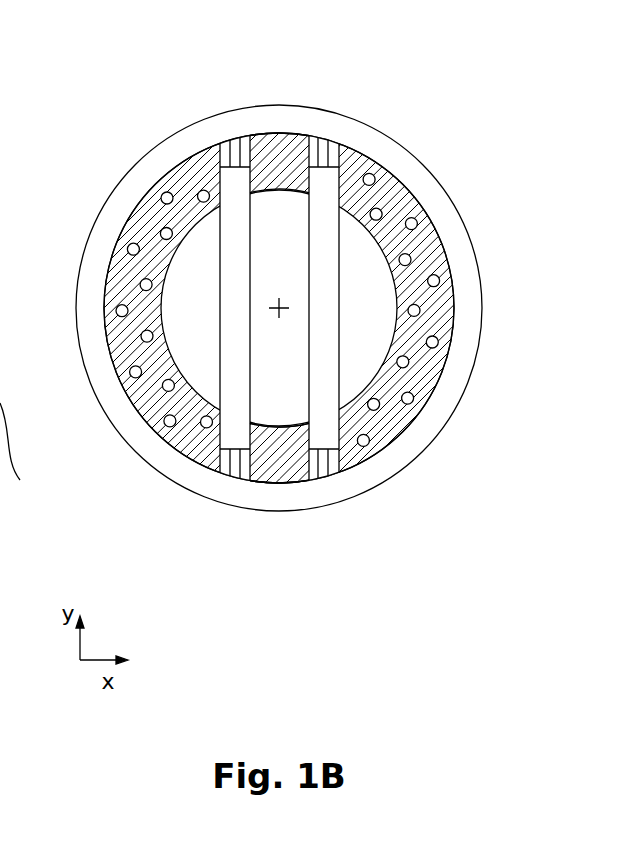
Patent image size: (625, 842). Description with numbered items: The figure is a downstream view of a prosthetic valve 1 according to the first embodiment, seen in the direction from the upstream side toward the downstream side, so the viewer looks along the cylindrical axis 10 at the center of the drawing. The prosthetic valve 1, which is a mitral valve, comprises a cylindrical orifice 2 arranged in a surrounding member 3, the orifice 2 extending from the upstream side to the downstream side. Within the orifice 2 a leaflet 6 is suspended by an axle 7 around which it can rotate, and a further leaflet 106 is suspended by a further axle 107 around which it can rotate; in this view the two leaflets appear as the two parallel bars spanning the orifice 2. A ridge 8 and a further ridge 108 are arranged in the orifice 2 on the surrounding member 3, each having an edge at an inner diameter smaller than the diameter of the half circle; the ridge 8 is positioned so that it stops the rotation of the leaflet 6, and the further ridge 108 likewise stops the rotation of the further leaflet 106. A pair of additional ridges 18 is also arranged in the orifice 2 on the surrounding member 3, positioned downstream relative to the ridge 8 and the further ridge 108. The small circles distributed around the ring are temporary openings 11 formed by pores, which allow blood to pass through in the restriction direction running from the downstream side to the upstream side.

The prosthetic valve 1 is at (197, 524).
The orifice 2 is at (287, 470).
The surrounding member 3 is at (16, 455).
The leaflet 6 is at (230, 383).
The axle 7 is at (233, 148).
The ridge 8 is at (133, 338).
The cylindrical axis 10 is at (283, 310).
The temporary openings 11 is at (134, 238).
The additional ridges 18 is at (285, 155).
The further leaflet 106 is at (323, 382).
The further axle 107 is at (327, 153).
The further ridge 108 is at (425, 362).